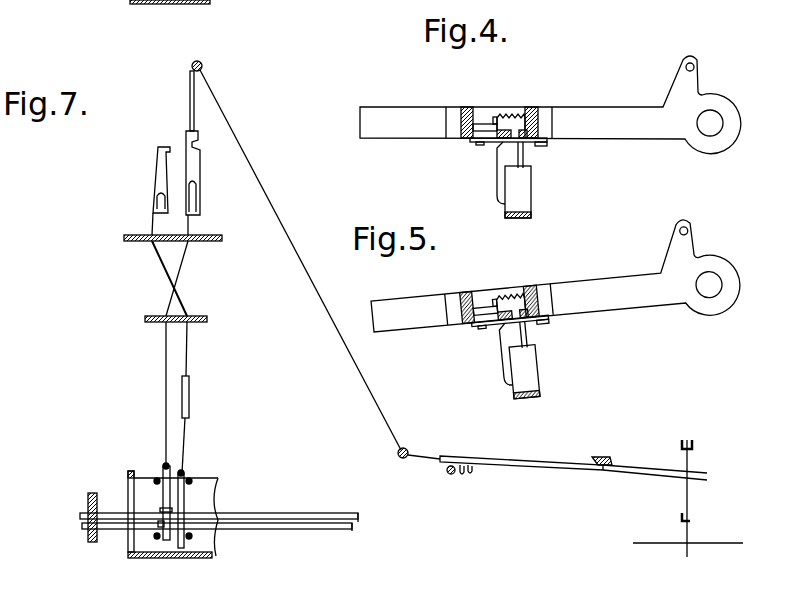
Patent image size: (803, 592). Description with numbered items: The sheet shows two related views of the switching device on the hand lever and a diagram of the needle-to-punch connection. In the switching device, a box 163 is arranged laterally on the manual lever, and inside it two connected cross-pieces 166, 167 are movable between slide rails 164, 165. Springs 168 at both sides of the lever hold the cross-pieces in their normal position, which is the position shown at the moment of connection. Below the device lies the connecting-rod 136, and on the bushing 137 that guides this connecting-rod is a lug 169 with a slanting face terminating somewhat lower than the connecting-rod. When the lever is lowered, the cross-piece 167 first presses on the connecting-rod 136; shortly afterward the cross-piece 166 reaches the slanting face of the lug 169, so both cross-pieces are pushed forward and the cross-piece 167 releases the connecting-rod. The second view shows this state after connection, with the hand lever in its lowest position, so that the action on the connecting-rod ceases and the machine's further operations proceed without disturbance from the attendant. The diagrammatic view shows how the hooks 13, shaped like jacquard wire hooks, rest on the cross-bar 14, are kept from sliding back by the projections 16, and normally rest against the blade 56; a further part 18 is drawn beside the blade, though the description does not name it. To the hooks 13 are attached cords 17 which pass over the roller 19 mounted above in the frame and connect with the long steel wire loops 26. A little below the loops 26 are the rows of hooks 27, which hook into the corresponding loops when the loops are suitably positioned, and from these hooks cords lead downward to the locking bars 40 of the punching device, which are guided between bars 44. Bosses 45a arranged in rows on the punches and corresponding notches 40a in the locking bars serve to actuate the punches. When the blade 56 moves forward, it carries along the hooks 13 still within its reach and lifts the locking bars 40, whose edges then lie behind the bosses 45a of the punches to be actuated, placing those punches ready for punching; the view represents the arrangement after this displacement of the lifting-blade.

In FIG. 4, the box 163 is at (455, 114).
In FIG. 5, the box 163 is at (554, 281).
In FIG. 4, the slide rail 164 is at (481, 125).
In FIG. 5, the slide rail 164 is at (484, 288).
In FIG. 4, the spring 168 is at (513, 113).
In FIG. 5, the spring 168 is at (516, 290).
In FIG. 4, the slide rail 165 is at (466, 141).
In FIG. 5, the slide rail 165 is at (491, 332).
In FIG. 4, the cross-piece 166 is at (479, 144).
In FIG. 5, the cross-piece 166 is at (479, 340).
In FIG. 4, the cross-piece 167 is at (528, 144).
In FIG. 5, the cross-piece 167 is at (551, 331).
In FIG. 4, the connecting-rod 136 is at (524, 160).
In FIG. 5, the connecting-rod 136 is at (547, 343).
In FIG. 4, the lug 169 is at (498, 170).
In FIG. 5, the lug 169 is at (486, 356).
In FIG. 4, the bushing 137 is at (530, 201).
In FIG. 5, the bushing 137 is at (538, 370).
In FIG. 7, the boss 45a is at (150, 5).
In FIG. 7, the roller 19 is at (203, 67).
In FIG. 7, the steel wire loop 26 is at (190, 100).
In FIG. 7, the hook 27 is at (198, 145).
In FIG. 7, the cord 17 is at (303, 265).
In FIG. 7, the locking bar 40 is at (161, 477).
In FIG. 7, the bar 44 is at (190, 478).
In FIG. 7, the notch 40a is at (160, 510).
In FIG. 7, the hook 13 is at (609, 467).
In FIG. 7, the cross-bar 14 is at (452, 475).
In FIG. 7, the projection 16 is at (465, 475).
In FIG. 7, the blade 56 is at (603, 459).
In FIG. 7, the link 18 is at (604, 474).